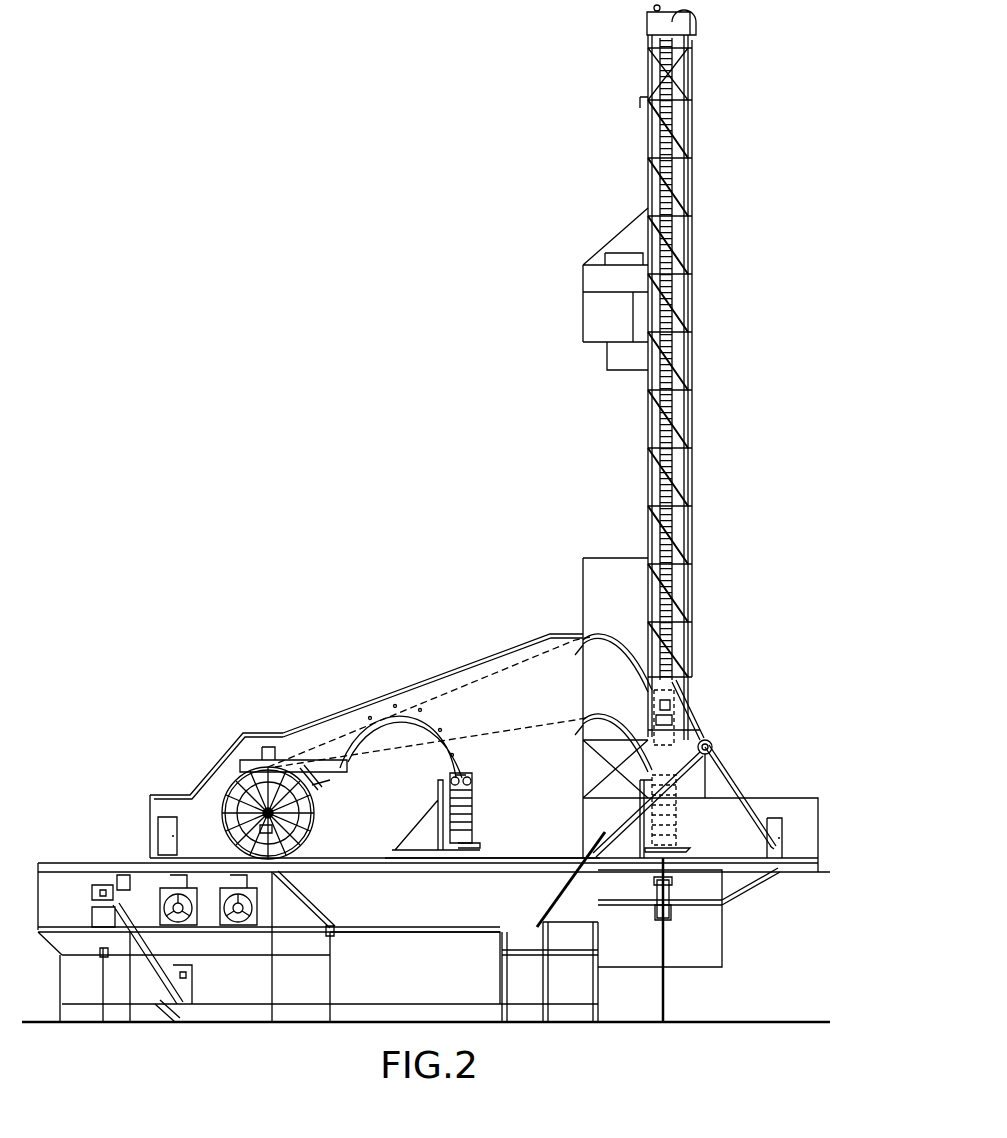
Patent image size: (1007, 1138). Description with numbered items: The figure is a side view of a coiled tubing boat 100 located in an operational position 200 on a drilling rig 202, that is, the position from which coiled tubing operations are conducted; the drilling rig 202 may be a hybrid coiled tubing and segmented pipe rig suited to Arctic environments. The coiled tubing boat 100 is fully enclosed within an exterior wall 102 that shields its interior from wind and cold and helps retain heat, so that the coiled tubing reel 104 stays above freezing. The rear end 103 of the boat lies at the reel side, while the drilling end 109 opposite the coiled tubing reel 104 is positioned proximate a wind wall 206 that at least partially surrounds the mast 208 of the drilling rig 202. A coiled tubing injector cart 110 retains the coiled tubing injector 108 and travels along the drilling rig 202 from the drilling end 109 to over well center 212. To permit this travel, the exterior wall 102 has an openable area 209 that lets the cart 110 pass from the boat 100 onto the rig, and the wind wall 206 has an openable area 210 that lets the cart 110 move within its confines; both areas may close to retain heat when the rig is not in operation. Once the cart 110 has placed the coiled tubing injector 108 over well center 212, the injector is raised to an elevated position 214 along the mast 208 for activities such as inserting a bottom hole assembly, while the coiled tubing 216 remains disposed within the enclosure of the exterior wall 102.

The coiled tubing boat 100 is at (383, 623).
The exterior wall 102 is at (283, 745).
The rear end 103 is at (149, 830).
The coiled tubing reel 104 is at (240, 776).
The coiled tubing injector 108 is at (675, 715).
The drilling end 109 is at (586, 645).
The coiled tubing injector cart 110 is at (478, 843).
The operational position 200 is at (495, 620).
The drilling rig 202 is at (745, 907).
The wind wall 206 is at (614, 558).
The mast 208 is at (695, 472).
The openable area 209 is at (582, 677).
The openable area 210 is at (660, 645).
The well center 212 is at (668, 1004).
The elevated position 214 is at (685, 700).
The coiled tubing 216 is at (525, 648).